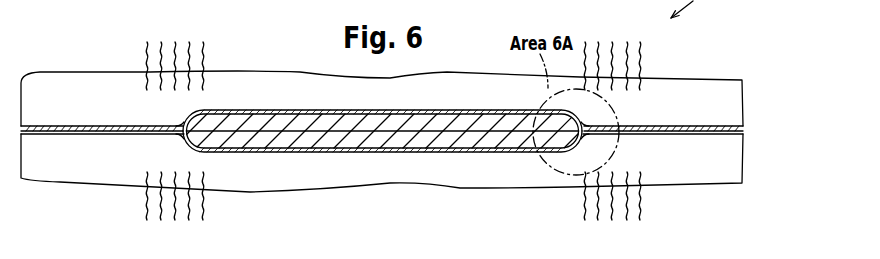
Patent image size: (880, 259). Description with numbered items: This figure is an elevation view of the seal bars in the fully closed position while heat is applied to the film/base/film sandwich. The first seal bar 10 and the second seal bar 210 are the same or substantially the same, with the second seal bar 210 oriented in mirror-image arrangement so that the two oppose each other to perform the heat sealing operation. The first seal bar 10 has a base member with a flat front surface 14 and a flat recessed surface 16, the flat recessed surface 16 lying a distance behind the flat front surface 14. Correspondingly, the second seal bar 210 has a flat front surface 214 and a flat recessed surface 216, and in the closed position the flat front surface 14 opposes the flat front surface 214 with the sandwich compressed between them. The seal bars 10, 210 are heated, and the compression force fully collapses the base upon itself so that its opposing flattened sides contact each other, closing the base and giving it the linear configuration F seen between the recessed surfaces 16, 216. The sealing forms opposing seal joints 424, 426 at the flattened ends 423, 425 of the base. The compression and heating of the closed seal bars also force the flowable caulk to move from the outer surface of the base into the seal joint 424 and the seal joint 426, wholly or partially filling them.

The first seal bar 10 is at (720, 84).
The flat front surface 14 is at (60, 128).
The flat front surface 214 is at (57, 137).
The second seal bar 210 is at (718, 173).
The flat recessed surface 16 is at (312, 109).
The flat recessed surface 216 is at (315, 153).
The linear configuration F is at (247, 128).
The flattened end 425 is at (177, 118).
The seal joint 426 is at (178, 143).
The flattened end 423 is at (585, 112).
The seal joint 424 is at (585, 149).